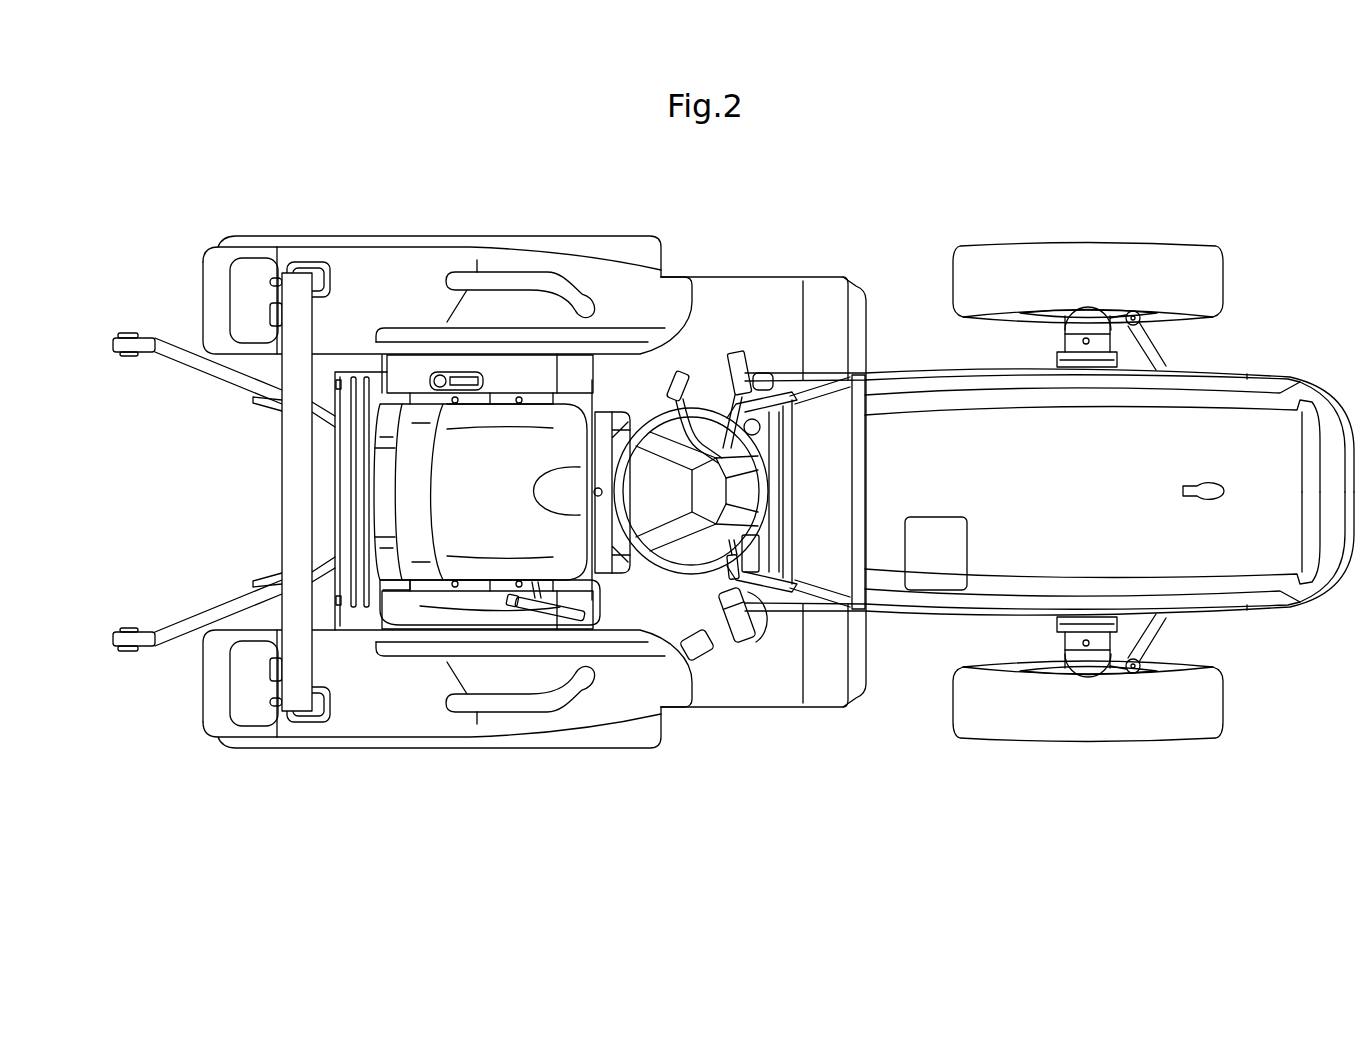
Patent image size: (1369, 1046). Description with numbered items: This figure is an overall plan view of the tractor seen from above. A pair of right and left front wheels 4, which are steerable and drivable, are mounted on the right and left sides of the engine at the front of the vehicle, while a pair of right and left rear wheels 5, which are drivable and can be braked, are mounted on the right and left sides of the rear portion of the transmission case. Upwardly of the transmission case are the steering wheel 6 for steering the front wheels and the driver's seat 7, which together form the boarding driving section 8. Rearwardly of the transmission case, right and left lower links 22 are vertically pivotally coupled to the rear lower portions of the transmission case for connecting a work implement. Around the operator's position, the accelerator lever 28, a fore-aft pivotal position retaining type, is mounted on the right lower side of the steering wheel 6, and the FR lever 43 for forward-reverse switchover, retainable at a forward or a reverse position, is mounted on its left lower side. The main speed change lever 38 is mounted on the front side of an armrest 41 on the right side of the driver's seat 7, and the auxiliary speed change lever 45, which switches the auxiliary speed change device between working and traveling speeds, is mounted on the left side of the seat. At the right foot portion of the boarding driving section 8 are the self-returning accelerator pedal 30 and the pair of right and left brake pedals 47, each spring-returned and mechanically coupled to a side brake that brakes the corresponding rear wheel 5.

The front wheel 4 is at (1220, 283).
The rear wheel 5 is at (305, 238).
The steering wheel 6 is at (762, 495).
The driver's seat 7 is at (380, 492).
The boarding driving section 8 is at (751, 307).
The lower link 22 is at (150, 338).
The accelerator lever 28 is at (722, 576).
The accelerator pedal 30 is at (710, 661).
The main speed change lever 38 is at (542, 593).
The armrest 41 is at (438, 605).
The FR lever 43 is at (678, 385).
The auxiliary speed change lever 45 is at (440, 376).
The brake pedal 47 is at (732, 594).